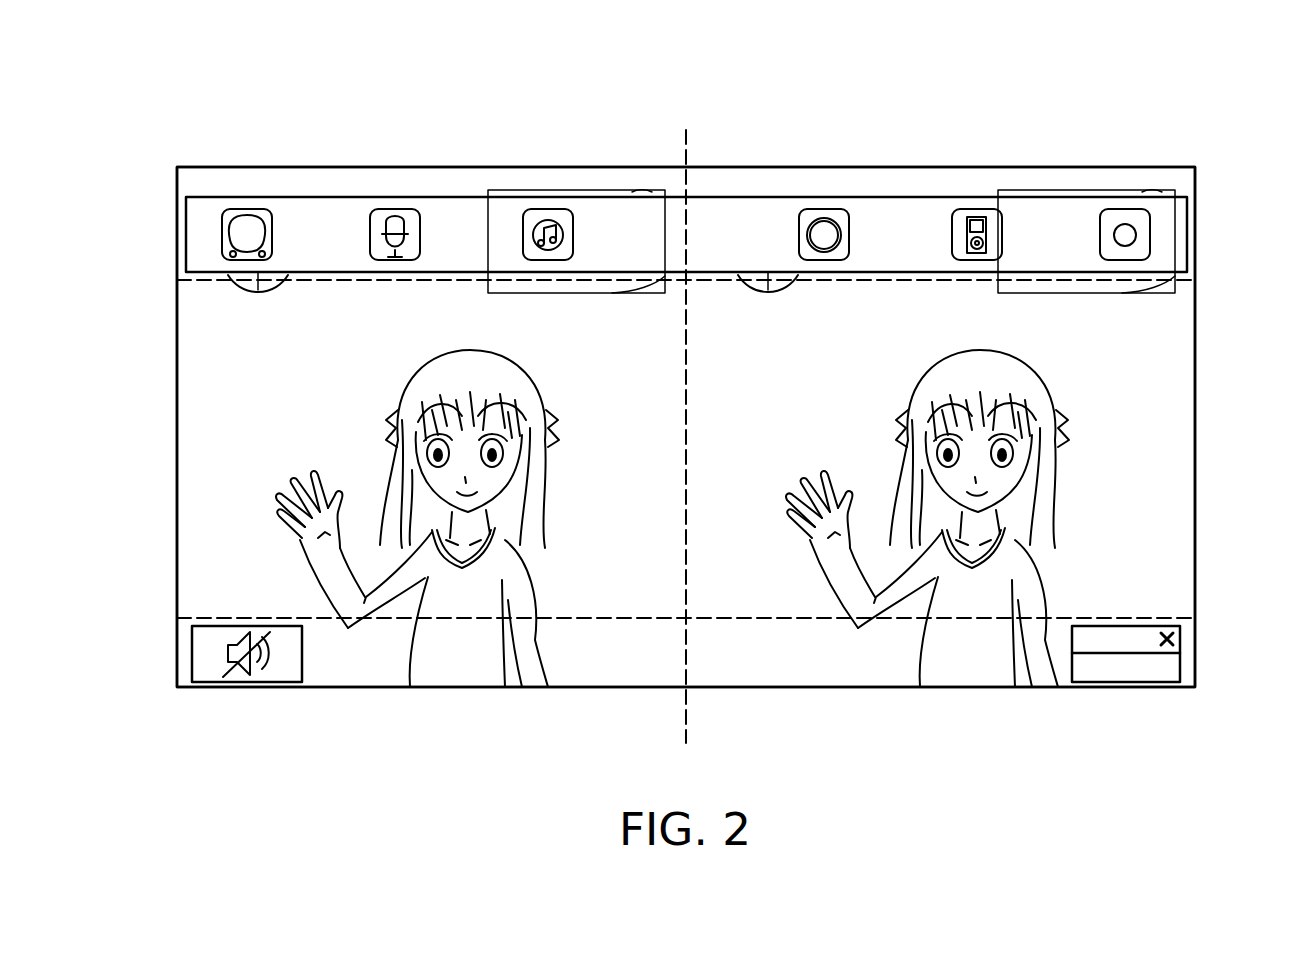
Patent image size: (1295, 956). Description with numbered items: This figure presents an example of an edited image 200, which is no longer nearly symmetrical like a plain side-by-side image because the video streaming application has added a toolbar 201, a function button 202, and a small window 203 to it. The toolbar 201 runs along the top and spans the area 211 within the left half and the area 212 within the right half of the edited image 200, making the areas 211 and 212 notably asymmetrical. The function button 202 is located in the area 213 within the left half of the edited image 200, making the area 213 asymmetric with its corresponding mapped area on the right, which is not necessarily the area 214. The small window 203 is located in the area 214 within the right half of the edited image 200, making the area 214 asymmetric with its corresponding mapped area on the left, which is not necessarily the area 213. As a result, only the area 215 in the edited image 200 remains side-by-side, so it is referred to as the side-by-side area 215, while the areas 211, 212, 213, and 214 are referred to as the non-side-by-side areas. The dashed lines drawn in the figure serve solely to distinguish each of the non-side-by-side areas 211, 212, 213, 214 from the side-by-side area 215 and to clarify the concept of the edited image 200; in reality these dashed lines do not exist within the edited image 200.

The edited image 200 is at (110, 80).
The toolbar 201 is at (1187, 232).
The function button 202 is at (192, 655).
The small window 203 is at (1180, 665).
The area 211 is at (451, 180).
The area 212 is at (896, 180).
The area 213 is at (603, 673).
The area 214 is at (792, 673).
The side-by-side area 215 is at (1182, 427).